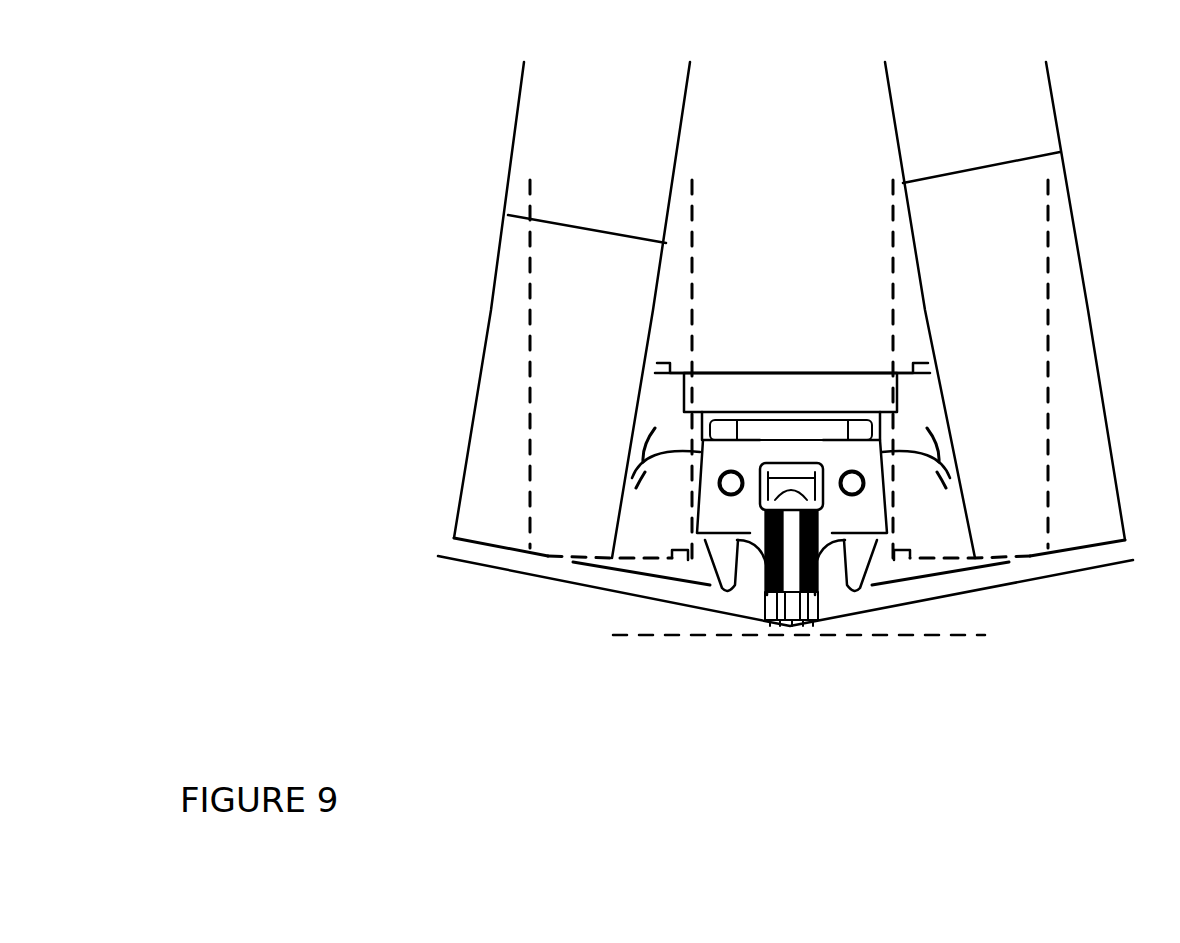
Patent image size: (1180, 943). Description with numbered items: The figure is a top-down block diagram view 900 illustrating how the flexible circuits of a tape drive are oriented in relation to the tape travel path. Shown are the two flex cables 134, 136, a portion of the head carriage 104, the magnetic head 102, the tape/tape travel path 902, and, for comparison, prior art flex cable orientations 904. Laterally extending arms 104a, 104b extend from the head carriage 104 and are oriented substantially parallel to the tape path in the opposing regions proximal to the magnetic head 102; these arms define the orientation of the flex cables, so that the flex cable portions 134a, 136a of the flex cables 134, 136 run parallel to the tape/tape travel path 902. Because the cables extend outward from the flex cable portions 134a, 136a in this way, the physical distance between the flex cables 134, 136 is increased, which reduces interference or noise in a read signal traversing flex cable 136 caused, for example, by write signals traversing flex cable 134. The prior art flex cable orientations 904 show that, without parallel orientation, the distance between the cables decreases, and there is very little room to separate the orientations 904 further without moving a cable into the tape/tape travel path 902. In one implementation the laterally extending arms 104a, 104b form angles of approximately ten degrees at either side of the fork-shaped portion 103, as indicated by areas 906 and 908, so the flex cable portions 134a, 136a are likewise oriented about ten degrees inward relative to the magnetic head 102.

The top-down block diagram view 900 is at (321, 127).
The flex cable 134 is at (572, 310).
The flex cable portion 134a is at (582, 538).
The flex cable 136 is at (1005, 310).
The flex cable portion 136a is at (998, 539).
The prior art flex cable orientations 904 is at (874, 253).
The head carriage 104 is at (791, 425).
The laterally extending arm 104a is at (851, 517).
The laterally extending arm 104b is at (732, 517).
The fork-shaped portion 103 is at (791, 451).
The magnetic head 102 is at (748, 606).
The tape/tape travel path 902 is at (504, 590).
The area 908 is at (627, 606).
The area 906 is at (940, 606).